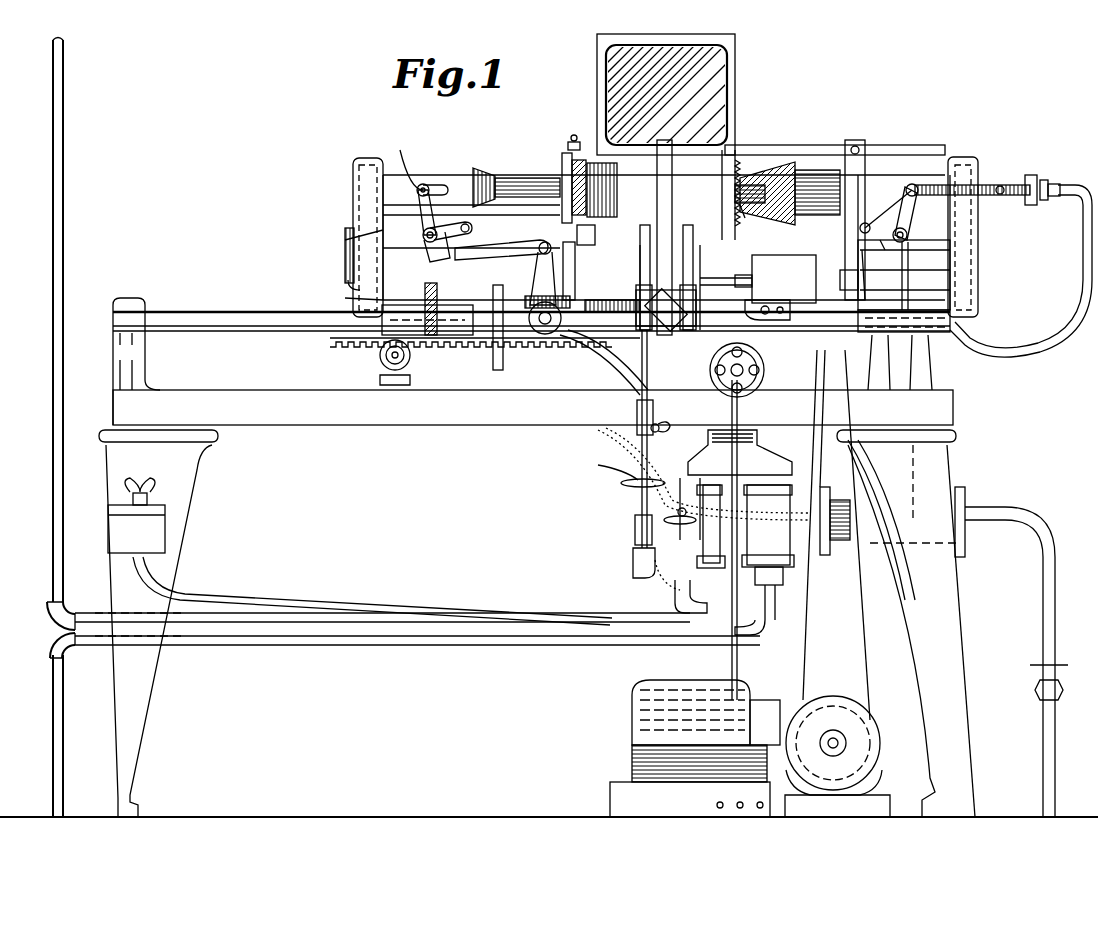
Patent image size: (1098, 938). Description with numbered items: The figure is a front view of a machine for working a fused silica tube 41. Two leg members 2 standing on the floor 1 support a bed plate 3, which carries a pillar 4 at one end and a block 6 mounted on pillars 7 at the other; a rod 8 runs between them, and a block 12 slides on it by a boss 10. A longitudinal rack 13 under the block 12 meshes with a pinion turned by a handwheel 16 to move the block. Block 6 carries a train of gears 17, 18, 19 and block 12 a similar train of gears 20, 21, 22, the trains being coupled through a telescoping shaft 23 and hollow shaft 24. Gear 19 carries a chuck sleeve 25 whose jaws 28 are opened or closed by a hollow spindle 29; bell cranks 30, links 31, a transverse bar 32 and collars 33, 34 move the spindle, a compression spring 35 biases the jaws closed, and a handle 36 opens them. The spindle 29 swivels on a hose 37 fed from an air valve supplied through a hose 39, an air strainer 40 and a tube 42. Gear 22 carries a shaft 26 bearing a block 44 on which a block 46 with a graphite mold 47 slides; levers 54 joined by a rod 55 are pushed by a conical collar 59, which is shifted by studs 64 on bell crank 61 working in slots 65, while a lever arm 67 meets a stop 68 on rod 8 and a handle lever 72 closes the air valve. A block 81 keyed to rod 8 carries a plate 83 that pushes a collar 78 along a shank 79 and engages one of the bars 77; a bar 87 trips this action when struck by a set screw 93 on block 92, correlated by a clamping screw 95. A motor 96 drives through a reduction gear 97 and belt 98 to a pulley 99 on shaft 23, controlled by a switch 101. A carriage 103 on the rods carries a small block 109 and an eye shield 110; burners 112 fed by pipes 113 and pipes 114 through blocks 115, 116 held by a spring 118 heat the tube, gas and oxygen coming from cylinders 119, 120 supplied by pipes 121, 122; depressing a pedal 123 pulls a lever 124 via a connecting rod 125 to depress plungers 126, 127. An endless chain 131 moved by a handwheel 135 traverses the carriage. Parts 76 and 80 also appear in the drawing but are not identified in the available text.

The floor 1 is at (549, 802).
The leg members 2 is at (128, 695).
The bed plate 3 is at (435, 418).
The pillar 4 is at (132, 368).
The block 6 is at (920, 318).
The pillars 7 is at (885, 372).
The rod 8 is at (245, 315).
The boss 10 is at (440, 345).
The block 12 is at (392, 210).
The longitudinal rack 13 is at (340, 345).
The handwheel 16 is at (378, 365).
The gear 17 is at (975, 290).
The gear 18 is at (975, 248).
The gear 19 is at (970, 158).
The gear 20 is at (343, 297).
The gear 21 is at (344, 239).
The gear 22 is at (355, 183).
The shaft 23 is at (800, 322).
The hollow shaft 24 is at (579, 271).
The chuck sleeve 25 is at (805, 162).
The shaft 26 is at (518, 182).
The jaws 28 is at (748, 185).
The hollow spindle 29 is at (1056, 185).
The bell cranks 30 is at (910, 185).
The links 31 is at (935, 185).
The transverse bar 32 is at (1041, 213).
The collar 33 is at (1027, 178).
The collar 34 is at (1044, 180).
The compression spring 35 is at (1008, 206).
The handle 36 is at (880, 190).
The hose 37 is at (1080, 250).
The hose 39 is at (622, 490).
The air strainer 40 is at (878, 548).
The fused silica tube 41 is at (675, 175).
The tube 42 is at (1048, 620).
The block 44 is at (562, 155).
The block 46 is at (566, 133).
The graphite mold 47 is at (620, 163).
The levers 54 is at (469, 224).
The rod 55 is at (541, 263).
The collar 59 is at (484, 170).
The bell crank 61 is at (405, 159).
The stud 64 is at (425, 182).
The slots 65 is at (436, 184).
The lever arm 67 is at (350, 270).
The stop 68 is at (505, 262).
The handle lever 72 is at (345, 240).
The rack 76 is at (730, 155).
The bars 77 is at (798, 145).
The collar 78 is at (855, 145).
The shank 79 is at (815, 210).
The shaft 80 is at (743, 219).
The block 81 is at (758, 278).
The bar or plate 83 is at (883, 254).
The bar or rod 87 is at (604, 362).
The block 92 is at (485, 337).
The set screw 93 is at (447, 305).
The clamping screw 95 is at (539, 337).
The motor 96 is at (706, 731).
The reduction gear 97 is at (880, 745).
The belt 98 is at (858, 592).
The pulley 99 is at (858, 280).
The switch 101 is at (143, 492).
The carriage 103 is at (614, 339).
The small block 109 is at (672, 335).
The eye shield 110 is at (735, 62).
The burners 112 is at (584, 238).
The pipes 113 is at (634, 438).
The pipes 114 is at (635, 520).
The block 115 is at (709, 277).
The block 116 is at (638, 290).
The spring 118 is at (745, 262).
The cylinder 119 is at (790, 560).
The cylinder 120 is at (660, 588).
The pipes 121 is at (432, 648).
The pipes 122 is at (355, 610).
The pedal 123 is at (740, 760).
The lever 124 is at (760, 440).
The connecting rod 125 is at (732, 658).
The plunger 126 is at (875, 460).
The plunger 127 is at (613, 471).
The endless chain 131 is at (520, 392).
The handwheel 135 is at (764, 370).